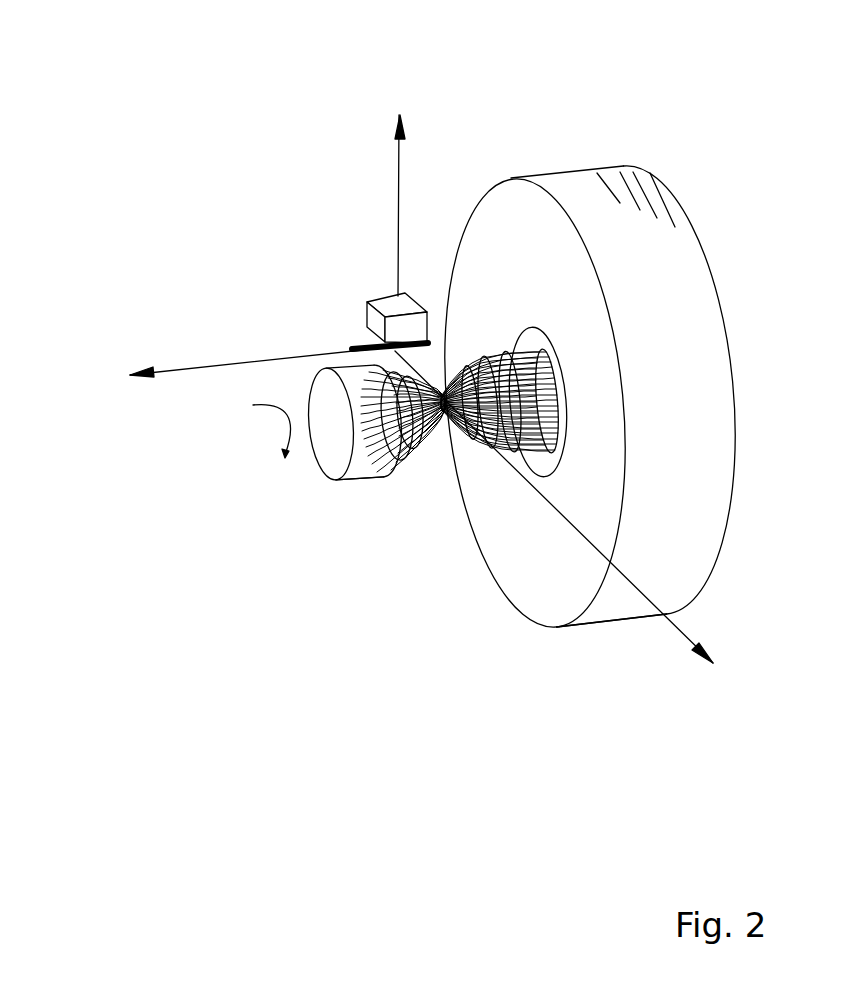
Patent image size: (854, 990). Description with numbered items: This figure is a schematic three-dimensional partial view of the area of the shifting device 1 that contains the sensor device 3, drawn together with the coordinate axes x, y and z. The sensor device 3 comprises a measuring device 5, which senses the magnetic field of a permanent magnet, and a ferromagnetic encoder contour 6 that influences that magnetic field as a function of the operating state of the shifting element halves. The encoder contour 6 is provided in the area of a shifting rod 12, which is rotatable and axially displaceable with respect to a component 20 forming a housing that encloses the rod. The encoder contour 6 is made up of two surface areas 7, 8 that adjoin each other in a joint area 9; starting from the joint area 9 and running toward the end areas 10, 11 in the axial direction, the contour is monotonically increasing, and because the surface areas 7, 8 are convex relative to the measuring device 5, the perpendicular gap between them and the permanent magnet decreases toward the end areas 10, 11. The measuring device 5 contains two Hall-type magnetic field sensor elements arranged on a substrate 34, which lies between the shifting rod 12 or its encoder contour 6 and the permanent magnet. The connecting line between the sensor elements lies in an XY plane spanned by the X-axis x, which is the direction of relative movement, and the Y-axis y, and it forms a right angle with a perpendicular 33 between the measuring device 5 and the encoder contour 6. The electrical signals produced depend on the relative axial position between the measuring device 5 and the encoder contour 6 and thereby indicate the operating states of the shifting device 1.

The shifting device 1 is at (300, 160).
The sensor device 3 is at (385, 296).
The measuring device 5 is at (370, 345).
The encoder contour 6 is at (418, 472).
The surface area 7 is at (390, 478).
The surface area 8 is at (479, 468).
The joint area 9 is at (437, 440).
The end area 10 is at (387, 417).
The end area 11 is at (556, 437).
The shifting rod 12 is at (340, 478).
The component 20 is at (575, 195).
The perpendicular 33 is at (441, 388).
The substrate 34 is at (443, 390).
The X-axis x is at (228, 365).
The Y-axis y is at (685, 633).
The z axis z is at (397, 217).